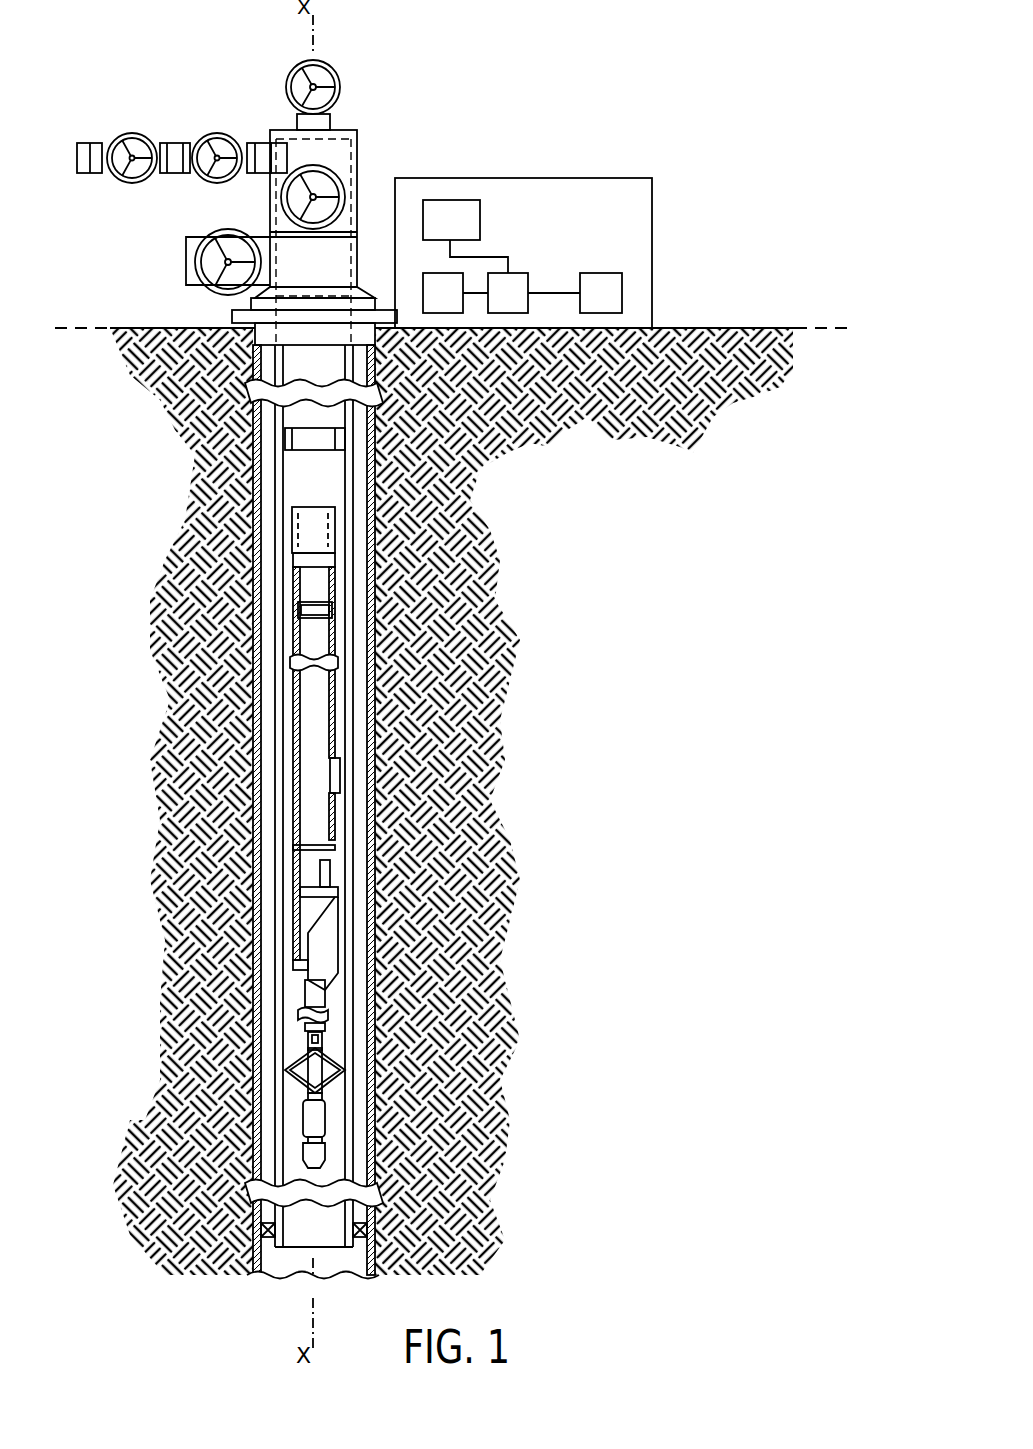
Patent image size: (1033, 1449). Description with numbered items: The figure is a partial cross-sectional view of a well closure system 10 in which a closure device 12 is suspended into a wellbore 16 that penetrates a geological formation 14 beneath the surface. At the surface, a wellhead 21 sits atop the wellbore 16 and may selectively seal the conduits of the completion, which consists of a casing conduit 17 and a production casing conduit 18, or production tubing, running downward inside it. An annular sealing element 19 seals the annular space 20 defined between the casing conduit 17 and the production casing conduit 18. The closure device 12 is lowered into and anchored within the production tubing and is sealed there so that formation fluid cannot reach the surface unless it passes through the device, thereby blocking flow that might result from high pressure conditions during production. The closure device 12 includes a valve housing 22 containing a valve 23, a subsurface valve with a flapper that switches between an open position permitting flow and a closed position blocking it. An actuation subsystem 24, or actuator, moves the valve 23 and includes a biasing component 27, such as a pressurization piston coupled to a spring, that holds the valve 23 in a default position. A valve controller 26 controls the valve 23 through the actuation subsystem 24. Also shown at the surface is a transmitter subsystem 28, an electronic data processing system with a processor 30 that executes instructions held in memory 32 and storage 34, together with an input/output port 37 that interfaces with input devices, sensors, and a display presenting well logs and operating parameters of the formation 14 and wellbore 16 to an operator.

The well closure system 10 is at (224, 178).
The closure device 12 is at (406, 833).
The geological formation 14 is at (618, 492).
The wellbore 16 is at (137, 325).
The casing conduit 17 is at (380, 470).
The production casing conduit 18 is at (357, 505).
The annular sealing element 19 is at (262, 1230).
The annular space 20 is at (265, 483).
The wellhead 21 is at (286, 130).
The valve housing 22 is at (340, 700).
The valve 23 is at (340, 877).
The actuation subsystem 24 is at (320, 825).
The valve controller 26 is at (310, 1033).
The biasing component 27 is at (345, 770).
The transmitter subsystem 28 is at (559, 228).
The processor 30 is at (530, 280).
The memory 32 is at (423, 293).
The storage 34 is at (622, 290).
The input/output (I/O) port 37 is at (452, 200).